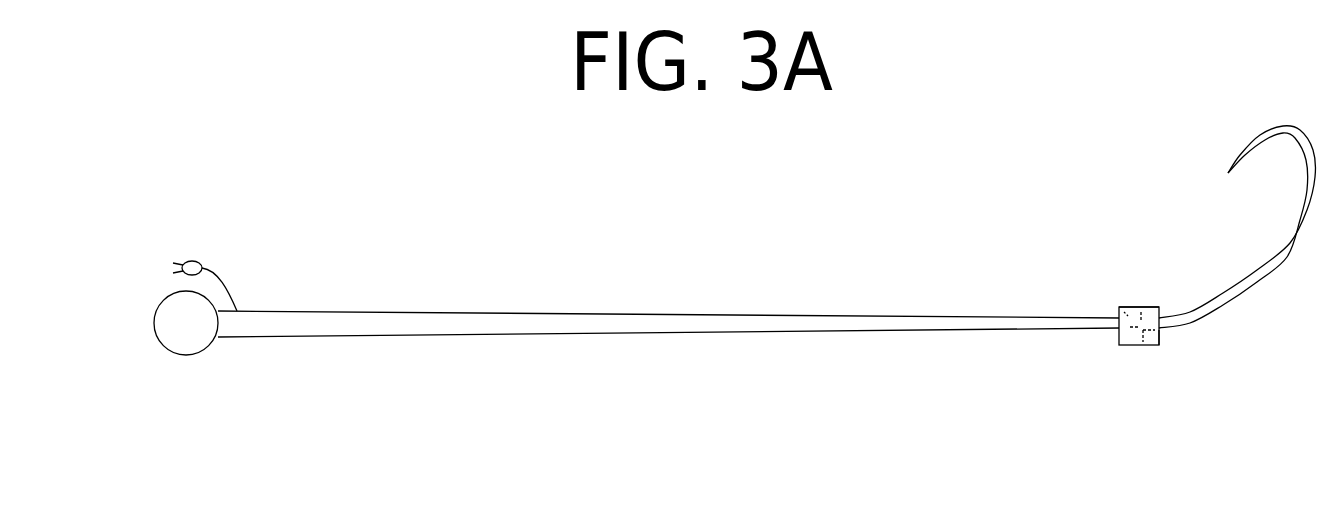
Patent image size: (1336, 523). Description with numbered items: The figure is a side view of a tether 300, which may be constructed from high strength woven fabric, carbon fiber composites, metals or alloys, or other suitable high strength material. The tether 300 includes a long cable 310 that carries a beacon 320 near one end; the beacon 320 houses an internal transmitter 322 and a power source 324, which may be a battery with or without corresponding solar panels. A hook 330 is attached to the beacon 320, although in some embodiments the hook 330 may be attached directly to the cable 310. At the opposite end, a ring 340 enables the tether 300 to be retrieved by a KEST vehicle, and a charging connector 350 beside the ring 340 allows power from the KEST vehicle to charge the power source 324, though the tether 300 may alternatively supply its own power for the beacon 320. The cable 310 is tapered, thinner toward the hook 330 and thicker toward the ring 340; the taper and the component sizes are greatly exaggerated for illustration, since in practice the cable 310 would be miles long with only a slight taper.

The tether 300 is at (282, 156).
The cable 310 is at (558, 313).
The beacon 320 is at (1142, 345).
The internal transmitter 322 is at (1119, 307).
The power source 324 is at (1159, 340).
The hook 330 is at (1242, 153).
The ring 340 is at (187, 353).
The charging connector 350 is at (212, 260).